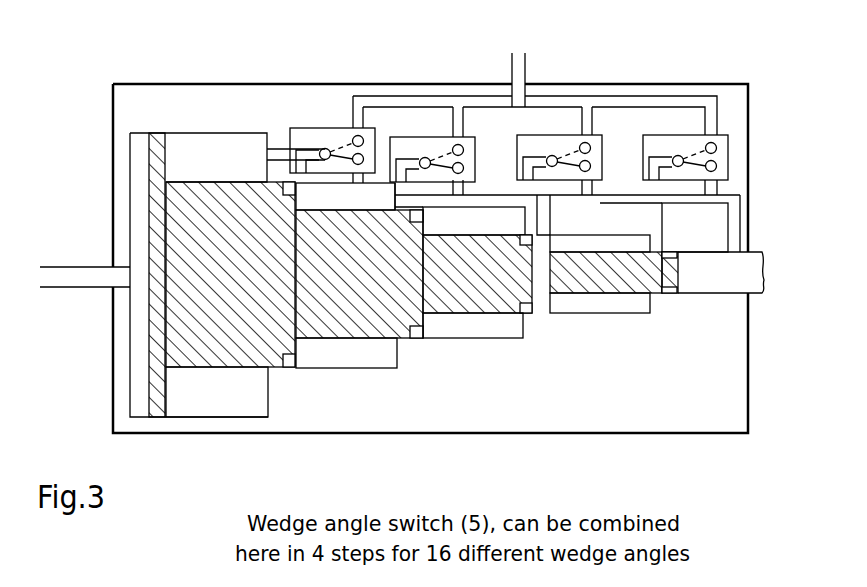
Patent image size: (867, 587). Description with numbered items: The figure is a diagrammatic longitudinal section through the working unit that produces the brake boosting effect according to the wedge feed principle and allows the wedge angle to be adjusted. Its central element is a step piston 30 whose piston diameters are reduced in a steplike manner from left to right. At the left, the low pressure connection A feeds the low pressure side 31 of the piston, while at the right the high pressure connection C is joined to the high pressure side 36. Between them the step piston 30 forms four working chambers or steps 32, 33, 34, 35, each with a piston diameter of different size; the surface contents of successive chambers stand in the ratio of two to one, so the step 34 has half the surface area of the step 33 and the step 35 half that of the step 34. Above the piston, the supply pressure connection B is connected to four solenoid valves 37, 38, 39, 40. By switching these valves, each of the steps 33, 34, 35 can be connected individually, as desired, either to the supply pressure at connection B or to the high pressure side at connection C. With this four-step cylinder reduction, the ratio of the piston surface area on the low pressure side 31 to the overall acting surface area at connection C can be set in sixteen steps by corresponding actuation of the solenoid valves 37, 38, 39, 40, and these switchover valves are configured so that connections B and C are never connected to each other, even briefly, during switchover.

The step piston 30 is at (148, 246).
The low pressure side 31 is at (138, 404).
The first working chamber or step 32 is at (230, 407).
The second working chamber or step 33 is at (337, 362).
The third working chamber or step 34 is at (460, 333).
The fourth working chamber or step 35 is at (585, 313).
The high pressure side 36 is at (702, 293).
The solenoid valve 37 is at (335, 128).
The solenoid valve 38 is at (432, 137).
The solenoid valve 39 is at (560, 135).
The solenoid valve 40 is at (686, 135).